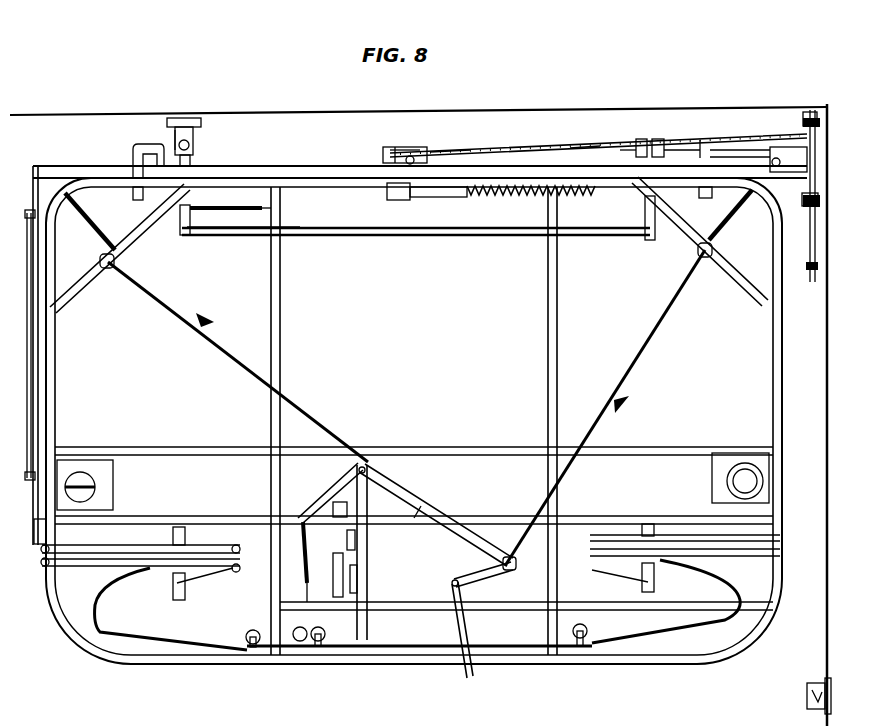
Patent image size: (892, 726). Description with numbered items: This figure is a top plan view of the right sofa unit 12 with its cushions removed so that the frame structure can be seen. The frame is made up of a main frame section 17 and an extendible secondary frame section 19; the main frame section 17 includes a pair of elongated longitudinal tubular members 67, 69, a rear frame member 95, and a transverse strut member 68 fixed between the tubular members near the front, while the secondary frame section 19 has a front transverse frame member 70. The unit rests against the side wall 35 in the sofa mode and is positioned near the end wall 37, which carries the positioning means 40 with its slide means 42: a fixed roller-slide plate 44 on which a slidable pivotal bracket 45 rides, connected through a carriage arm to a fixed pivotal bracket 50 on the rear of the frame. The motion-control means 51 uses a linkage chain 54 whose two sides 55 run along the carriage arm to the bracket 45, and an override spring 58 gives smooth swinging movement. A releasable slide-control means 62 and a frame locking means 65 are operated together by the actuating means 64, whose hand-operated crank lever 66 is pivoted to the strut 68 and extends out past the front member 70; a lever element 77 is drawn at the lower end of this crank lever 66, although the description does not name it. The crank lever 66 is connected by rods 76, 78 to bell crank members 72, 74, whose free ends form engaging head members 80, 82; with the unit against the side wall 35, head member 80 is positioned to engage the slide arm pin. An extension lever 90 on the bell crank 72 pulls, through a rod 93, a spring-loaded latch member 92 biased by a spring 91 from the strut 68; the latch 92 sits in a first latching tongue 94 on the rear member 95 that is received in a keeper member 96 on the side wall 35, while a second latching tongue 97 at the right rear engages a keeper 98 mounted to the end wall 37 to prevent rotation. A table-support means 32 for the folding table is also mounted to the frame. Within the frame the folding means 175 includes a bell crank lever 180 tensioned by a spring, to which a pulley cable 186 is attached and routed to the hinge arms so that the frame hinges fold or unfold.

The right sofa unit 12 is at (303, 660).
The main frame section 17 is at (272, 162).
The extendible secondary frame section 19 is at (230, 668).
The table-support means 32 is at (40, 398).
The side wall 35 is at (537, 115).
The end wall 37 is at (830, 510).
The positioning means 40 is at (585, 140).
The slide means 42 is at (792, 124).
The roller-slide plate 44 is at (818, 222).
The slidable pivotal bracket 45 is at (769, 134).
The fixed pivotal bracket 50 is at (385, 158).
The motion-control means 51 is at (392, 140).
The linkage belt or chain 54 is at (490, 147).
The sides of the link chain 55 is at (458, 148).
The override spring 58 is at (520, 197).
The releasable slide-control means 62 is at (790, 196).
The actuating means 64 is at (506, 548).
The frame locking means 65 is at (208, 128).
The hand-operated crank lever 66 is at (462, 638).
The longitudinal tubular member 67 is at (282, 306).
The transverse strut member 68 is at (392, 607).
The longitudinal tubular member 69 is at (548, 268).
The front transverse frame member 70 is at (645, 660).
The bell crank member 72 is at (708, 260).
The bell crank member 74 is at (110, 270).
The rod 76 is at (659, 330).
The lever 77 is at (435, 668).
The rod 78 is at (330, 427).
The engaging head member 80 is at (656, 138).
The engaging head member 82 is at (150, 146).
The extension lever 90 is at (645, 216).
The spring 91 is at (240, 225).
The spring-loaded latch member 92 is at (185, 233).
The rod 93 is at (407, 236).
The first latching tongue 94 is at (193, 156).
The rear frame member 95 is at (313, 178).
The keeper member 96 is at (174, 133).
The second latching tongue 97 is at (639, 138).
The keeper 98 is at (809, 682).
The folding means 175 is at (384, 575).
The bell crank lever 180 is at (527, 665).
The pulley line or cable 186 is at (193, 638).